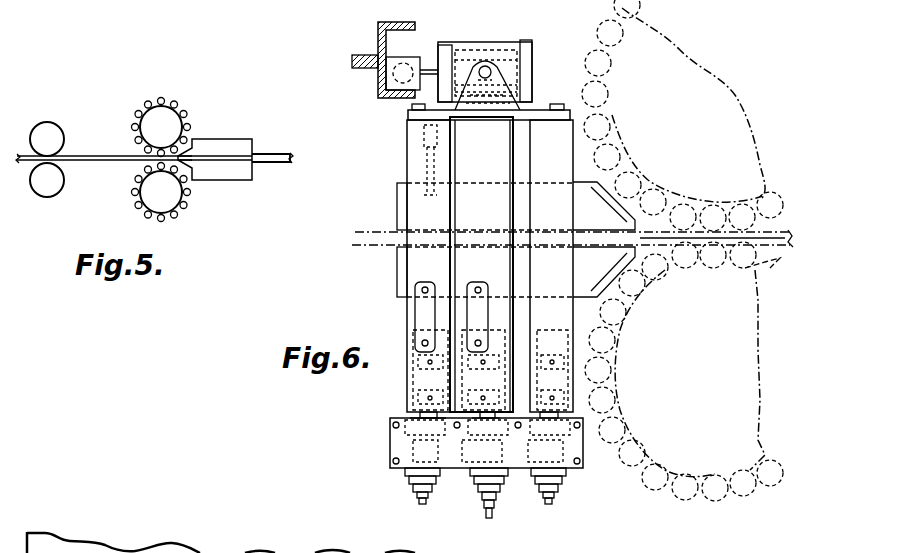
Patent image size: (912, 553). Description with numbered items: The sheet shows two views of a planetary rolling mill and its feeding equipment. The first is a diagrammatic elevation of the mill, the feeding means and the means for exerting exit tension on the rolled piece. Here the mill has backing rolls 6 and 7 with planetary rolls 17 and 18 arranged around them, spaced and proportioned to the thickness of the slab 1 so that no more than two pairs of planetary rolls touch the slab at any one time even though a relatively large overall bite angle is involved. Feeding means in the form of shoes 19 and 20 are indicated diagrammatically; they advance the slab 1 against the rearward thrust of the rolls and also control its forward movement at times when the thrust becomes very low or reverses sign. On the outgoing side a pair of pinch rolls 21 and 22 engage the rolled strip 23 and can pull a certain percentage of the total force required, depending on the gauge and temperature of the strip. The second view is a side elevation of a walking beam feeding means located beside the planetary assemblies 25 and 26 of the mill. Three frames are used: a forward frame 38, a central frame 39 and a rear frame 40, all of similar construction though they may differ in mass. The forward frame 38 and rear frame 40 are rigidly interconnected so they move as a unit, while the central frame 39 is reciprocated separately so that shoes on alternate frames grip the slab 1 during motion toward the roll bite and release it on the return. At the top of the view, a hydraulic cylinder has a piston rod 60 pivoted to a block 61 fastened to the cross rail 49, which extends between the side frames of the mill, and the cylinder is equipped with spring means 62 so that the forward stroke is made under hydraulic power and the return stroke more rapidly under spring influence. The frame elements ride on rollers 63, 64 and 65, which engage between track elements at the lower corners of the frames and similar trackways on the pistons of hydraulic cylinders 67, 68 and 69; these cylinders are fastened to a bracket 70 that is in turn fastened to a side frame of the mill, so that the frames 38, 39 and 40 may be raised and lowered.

In FIG. 5, the slab 1 is at (271, 154).
In FIG. 6, the slab 1 is at (366, 245).
In FIG. 5, the backing roll 6 is at (180, 108).
In FIG. 5, the backing roll 7 is at (143, 198).
In FIG. 5, the planetary rolls 17 is at (166, 98).
In FIG. 5, the planetary rolls 18 is at (135, 190).
In FIG. 5, the feeding means (shoe) 19 is at (218, 139).
In FIG. 5, the feeding means (shoe) 20 is at (222, 181).
In FIG. 5, the pinch roll 21 is at (47, 122).
In FIG. 5, the pinch roll 22 is at (47, 197).
In FIG. 5, the rolled strip 23 is at (93, 153).
In FIG. 6, the planetary assembly 25 is at (735, 100).
In FIG. 6, the planetary assembly 26 is at (752, 480).
In FIG. 6, the forward frame 38 is at (423, 269).
In FIG. 6, the central frame 39 is at (481, 267).
In FIG. 6, the rear frame 40 is at (490, 269).
In FIG. 6, the cross rail 49 is at (378, 34).
In FIG. 6, the piston rod 60 is at (438, 60).
In FIG. 6, the block 61 is at (390, 80).
In FIG. 6, the spring means 62 is at (478, 65).
In FIG. 6, the roller 63 is at (418, 418).
In FIG. 6, the roller 64 is at (490, 420).
In FIG. 6, the roller 65 is at (576, 415).
In FIG. 6, the hydraulic cylinder 67 is at (408, 478).
In FIG. 6, the hydraulic cylinder 68 is at (476, 480).
In FIG. 6, the hydraulic cylinder 69 is at (568, 478).
In FIG. 6, the bracket 70 is at (392, 447).